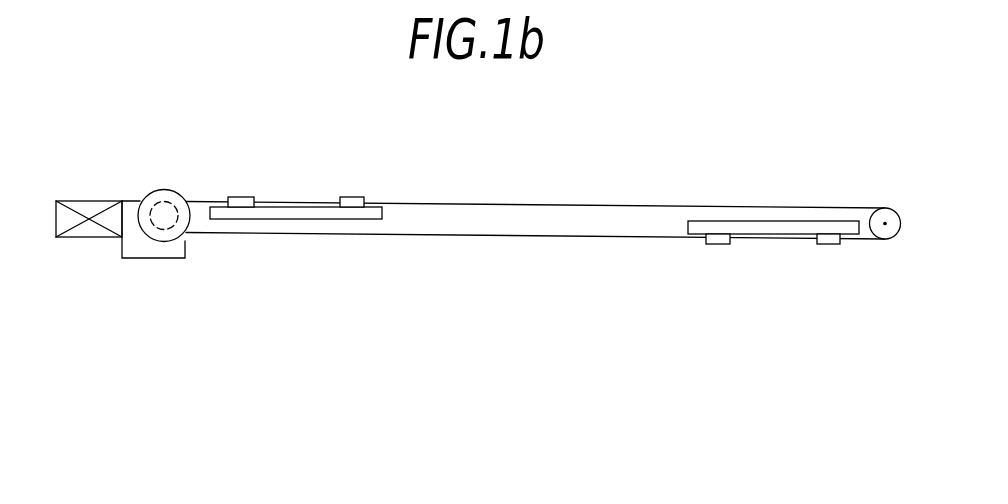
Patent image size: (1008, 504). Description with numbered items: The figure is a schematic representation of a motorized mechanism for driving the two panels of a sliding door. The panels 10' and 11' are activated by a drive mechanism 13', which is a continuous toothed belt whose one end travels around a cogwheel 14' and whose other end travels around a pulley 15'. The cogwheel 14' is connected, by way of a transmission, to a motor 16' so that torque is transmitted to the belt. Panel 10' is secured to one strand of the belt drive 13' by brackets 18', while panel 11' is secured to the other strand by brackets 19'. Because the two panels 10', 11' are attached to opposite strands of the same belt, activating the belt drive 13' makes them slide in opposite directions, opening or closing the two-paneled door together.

The panel 10' is at (296, 245).
The panel 11' is at (773, 189).
The drive mechanism 13' is at (535, 247).
The cogwheel 14' is at (146, 196).
The pulley 15' is at (870, 198).
The motor 16' is at (97, 257).
The brackets 18' is at (295, 173).
The brackets 19' is at (772, 262).